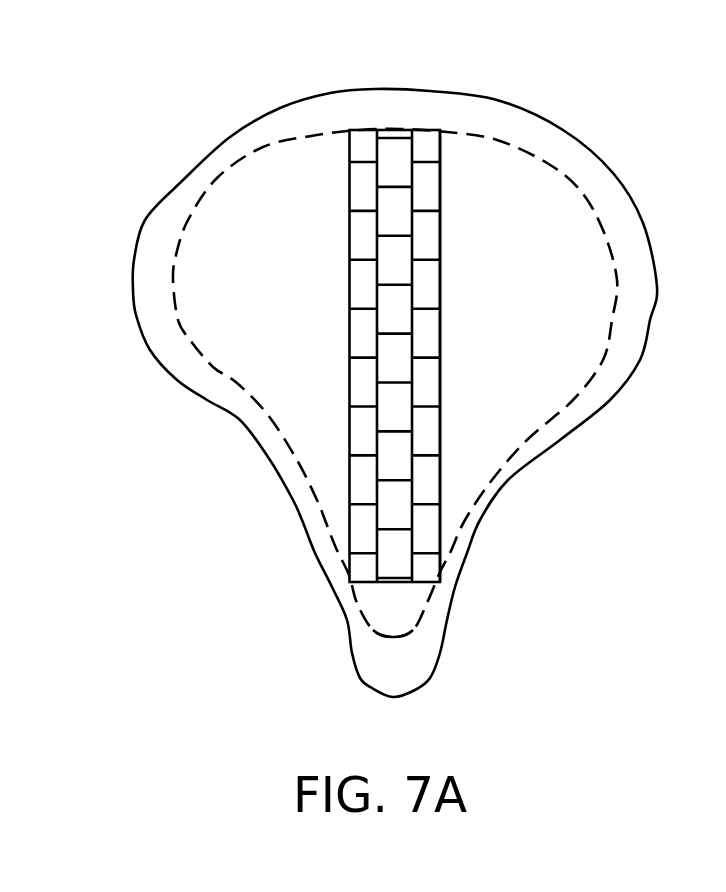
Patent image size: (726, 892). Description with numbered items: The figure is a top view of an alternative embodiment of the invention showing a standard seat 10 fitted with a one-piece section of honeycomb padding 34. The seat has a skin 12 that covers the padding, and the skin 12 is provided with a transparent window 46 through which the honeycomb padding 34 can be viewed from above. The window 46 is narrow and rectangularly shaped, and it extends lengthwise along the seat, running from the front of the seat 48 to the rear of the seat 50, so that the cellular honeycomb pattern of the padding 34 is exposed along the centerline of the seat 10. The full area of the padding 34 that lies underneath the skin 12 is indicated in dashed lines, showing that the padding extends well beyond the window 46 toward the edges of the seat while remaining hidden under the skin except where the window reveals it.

The standard seat 10 is at (378, 393).
The skin 12 is at (157, 247).
The honeycomb padding 34 is at (425, 480).
The transparent window 46 is at (440, 227).
The front of the seat 48 is at (392, 612).
The rear of the seat 50 is at (323, 150).